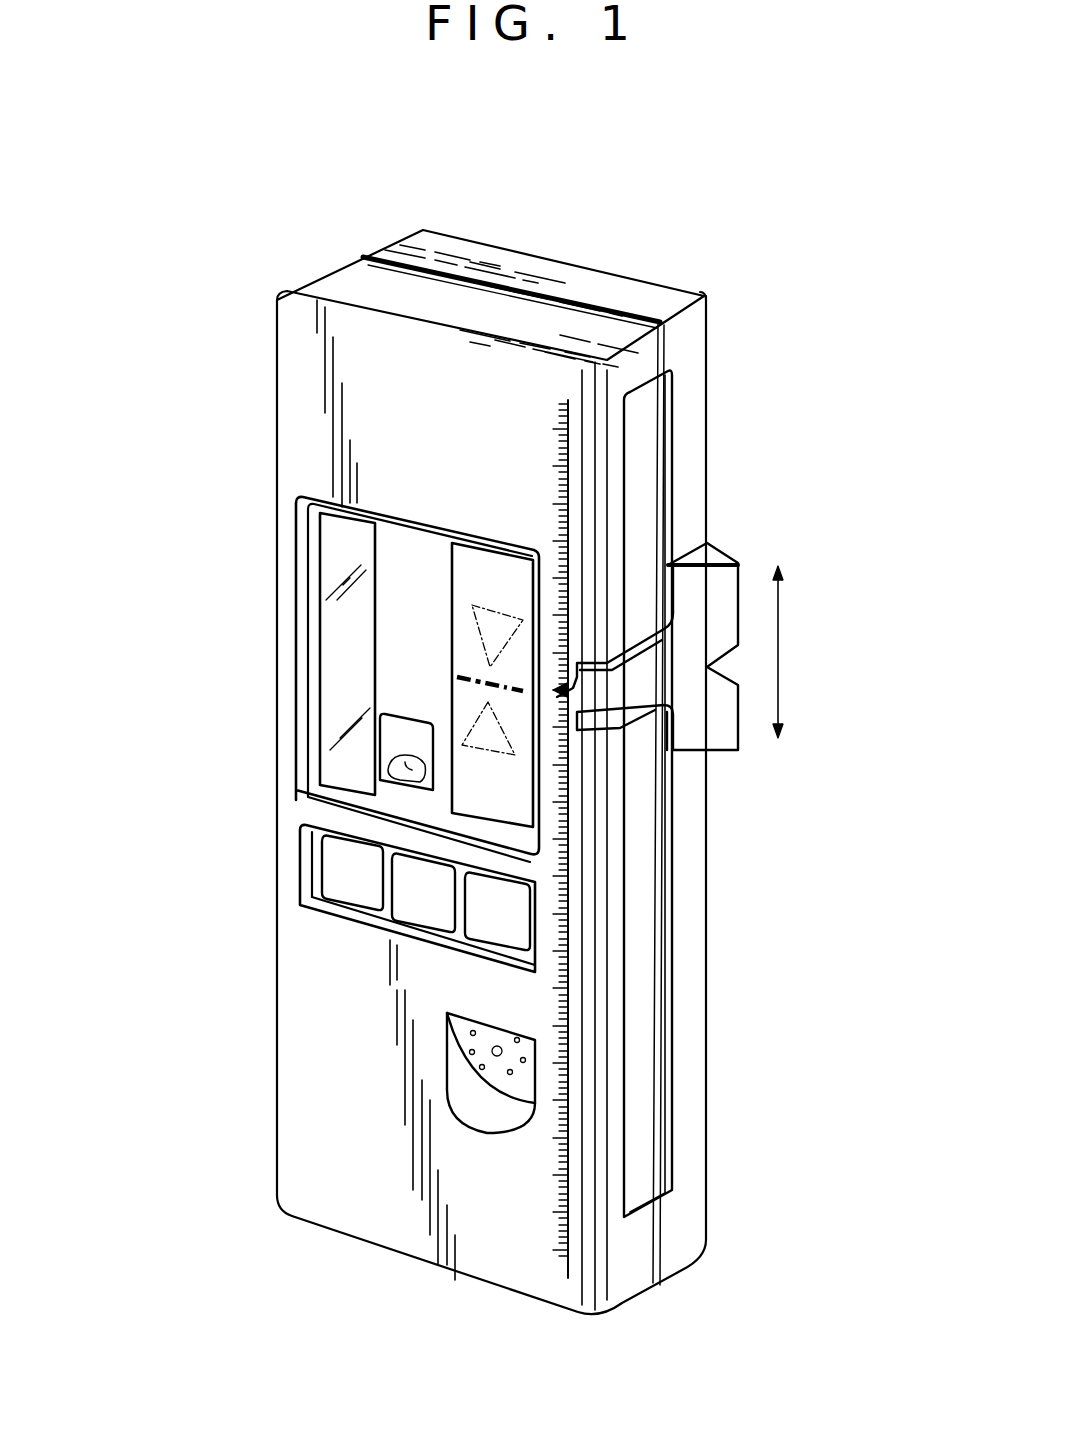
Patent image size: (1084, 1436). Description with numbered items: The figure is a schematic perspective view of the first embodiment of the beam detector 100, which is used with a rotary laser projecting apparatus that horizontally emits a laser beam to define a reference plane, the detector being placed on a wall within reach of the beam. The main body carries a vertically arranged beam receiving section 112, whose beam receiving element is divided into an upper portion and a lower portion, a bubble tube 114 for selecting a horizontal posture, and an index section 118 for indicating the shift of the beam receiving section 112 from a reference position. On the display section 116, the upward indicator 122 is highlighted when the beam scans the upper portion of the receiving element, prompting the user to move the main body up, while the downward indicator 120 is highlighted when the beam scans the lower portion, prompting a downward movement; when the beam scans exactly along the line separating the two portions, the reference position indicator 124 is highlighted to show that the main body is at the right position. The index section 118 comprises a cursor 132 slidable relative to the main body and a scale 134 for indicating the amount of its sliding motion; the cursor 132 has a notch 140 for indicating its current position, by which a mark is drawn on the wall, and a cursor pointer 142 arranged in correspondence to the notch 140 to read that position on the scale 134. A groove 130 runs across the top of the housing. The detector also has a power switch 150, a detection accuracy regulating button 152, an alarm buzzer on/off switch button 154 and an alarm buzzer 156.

The beam detector 100 is at (490, 233).
The beam receiving section 112 is at (347, 530).
The bubble tube 114 is at (400, 765).
The display section 116 is at (483, 573).
The index section 118 is at (732, 765).
The downward indicator 120 is at (537, 627).
The upward indicator 122 is at (521, 756).
The reference position indicator 124 is at (467, 677).
The groove 130 is at (593, 278).
The cursor 132 is at (712, 587).
The scale 134 is at (565, 968).
The notch 140 is at (707, 665).
The cursor pointer 142 is at (540, 683).
The power switch 150 is at (343, 877).
The detection accuracy regulating button 152 is at (423, 912).
The alarm buzzer on/off switch button 154 is at (510, 905).
The alarm buzzer 156 is at (495, 1063).